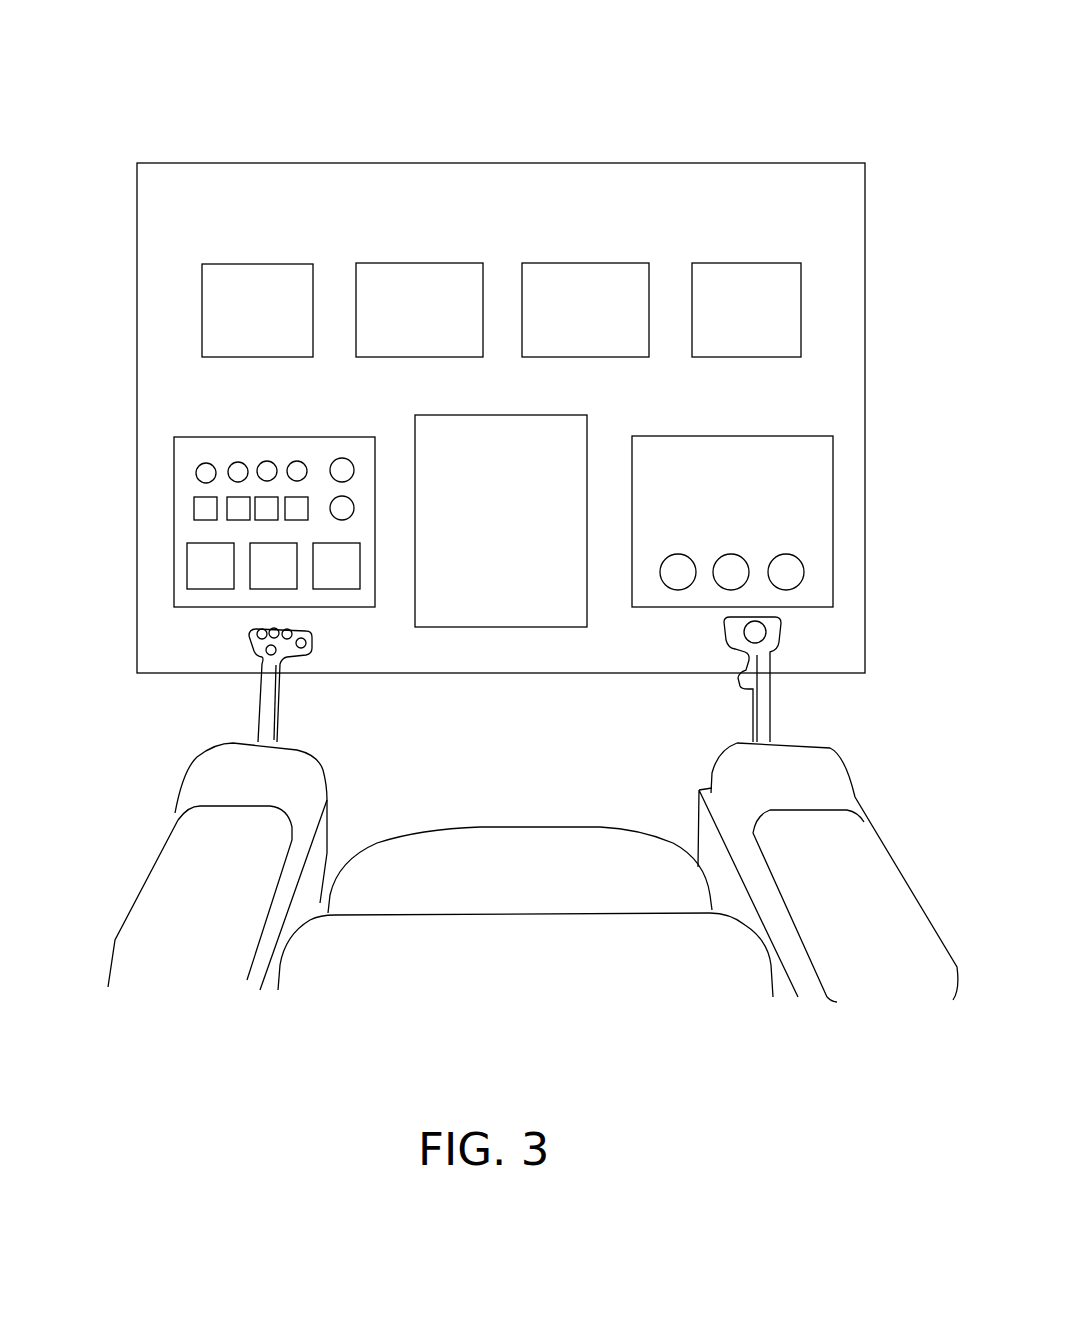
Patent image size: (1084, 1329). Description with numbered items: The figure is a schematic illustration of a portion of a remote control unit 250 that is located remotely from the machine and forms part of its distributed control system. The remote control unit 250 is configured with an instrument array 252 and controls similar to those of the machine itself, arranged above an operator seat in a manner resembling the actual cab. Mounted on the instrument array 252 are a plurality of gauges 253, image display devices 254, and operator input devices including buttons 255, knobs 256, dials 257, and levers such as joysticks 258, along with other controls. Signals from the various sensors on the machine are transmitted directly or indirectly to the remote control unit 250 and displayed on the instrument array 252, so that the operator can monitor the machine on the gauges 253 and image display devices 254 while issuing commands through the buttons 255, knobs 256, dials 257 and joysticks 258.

The remote control unit 250 is at (371, 1007).
The instrument array 252 is at (108, 171).
The gauges 253 is at (787, 568).
The image display devices 254 is at (734, 289).
The buttons 255 is at (297, 510).
The knobs 256 is at (297, 471).
The dials 257 is at (352, 505).
The joysticks 258 is at (288, 659).